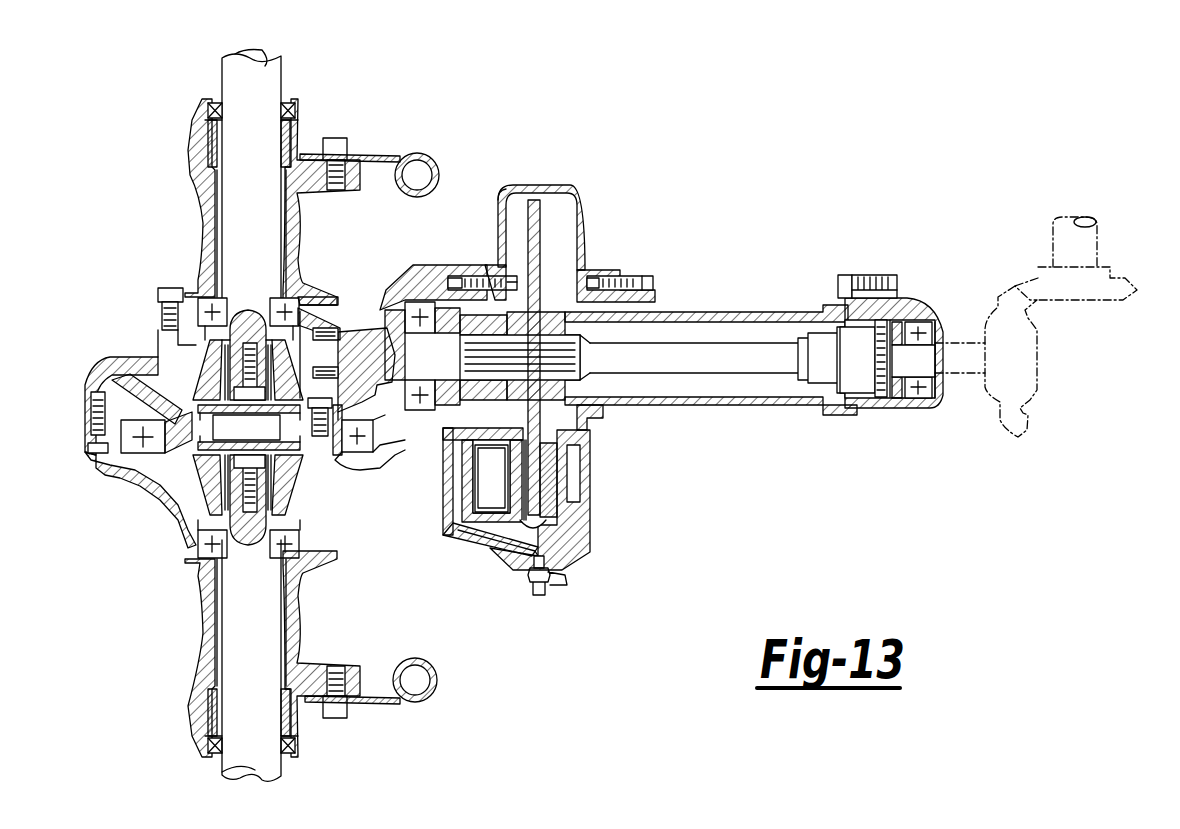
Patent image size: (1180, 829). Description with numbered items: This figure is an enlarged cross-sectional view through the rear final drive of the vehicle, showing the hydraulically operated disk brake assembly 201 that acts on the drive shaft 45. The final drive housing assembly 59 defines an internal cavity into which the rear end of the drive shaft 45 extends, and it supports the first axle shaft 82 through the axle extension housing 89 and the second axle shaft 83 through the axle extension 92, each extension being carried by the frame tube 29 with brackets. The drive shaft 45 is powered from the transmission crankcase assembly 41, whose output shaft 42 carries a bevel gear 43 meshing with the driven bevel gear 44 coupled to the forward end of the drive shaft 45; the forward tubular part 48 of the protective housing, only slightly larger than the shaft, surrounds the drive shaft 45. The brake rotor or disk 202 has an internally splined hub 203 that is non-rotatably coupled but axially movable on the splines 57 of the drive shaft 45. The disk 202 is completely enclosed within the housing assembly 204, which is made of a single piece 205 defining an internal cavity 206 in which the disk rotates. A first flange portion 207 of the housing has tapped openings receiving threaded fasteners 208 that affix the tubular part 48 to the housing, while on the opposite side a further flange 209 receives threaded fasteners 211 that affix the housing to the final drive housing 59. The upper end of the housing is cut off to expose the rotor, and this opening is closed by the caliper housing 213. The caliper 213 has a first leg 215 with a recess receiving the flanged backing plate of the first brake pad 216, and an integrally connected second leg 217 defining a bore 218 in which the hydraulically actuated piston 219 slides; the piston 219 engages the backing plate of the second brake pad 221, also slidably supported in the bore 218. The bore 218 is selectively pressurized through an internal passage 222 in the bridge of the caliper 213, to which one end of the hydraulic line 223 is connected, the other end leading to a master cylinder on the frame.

The first axle shaft 82 is at (275, 75).
The second axle shaft 83 is at (258, 768).
The axle extension housing 89 is at (300, 238).
The axle extension 92 is at (300, 605).
The seat pillar rail 29 is at (440, 177).
The final drive housing assembly 59 is at (128, 362).
The transmission crankcase assembly 41 is at (918, 295).
The output shaft 42 is at (1090, 238).
The bevel gear 43 is at (1125, 298).
The driven bevel gear 44 is at (1030, 412).
The drive shaft 45 is at (748, 330).
The forward tubular part 48 is at (738, 405).
The splines 57 is at (565, 358).
The disk brake assembly 201 is at (588, 186).
The brake rotor or disk 202 is at (540, 225).
The hub 203 is at (555, 322).
The housing assembly 204 is at (517, 170).
The single piece 205 is at (498, 237).
The internal cavity 206 is at (570, 256).
The first flange portion 207 is at (608, 413).
The threaded fasteners 208 is at (653, 283).
The further flange 209 is at (488, 326).
The threaded fasteners 211 is at (440, 268).
The caliper housing 213 is at (580, 545).
The first leg 215 is at (580, 488).
The first brake pad 216 is at (548, 503).
The second leg 217 is at (445, 487).
The bore 218 is at (466, 507).
The hydraulically actuated piston 219 is at (490, 490).
The second brake pad 221 is at (500, 458).
The internal passage 222 is at (495, 548).
The hydraulic line 223 is at (568, 590).